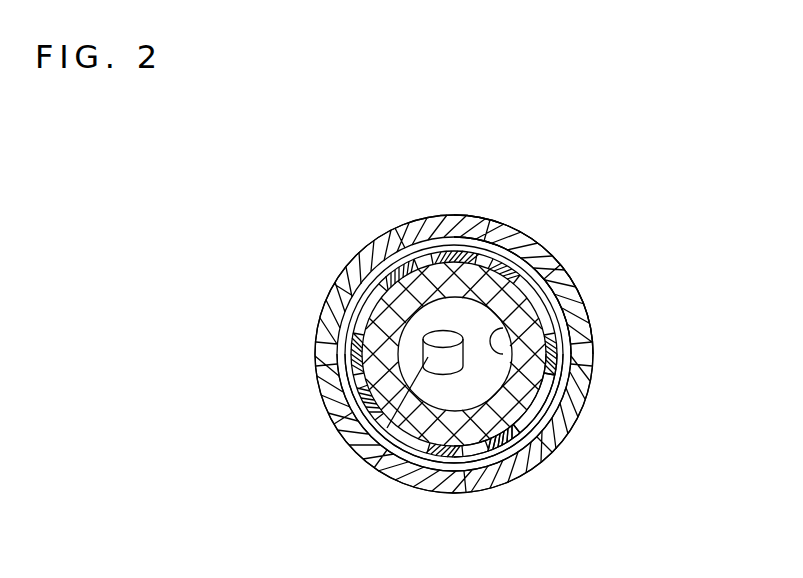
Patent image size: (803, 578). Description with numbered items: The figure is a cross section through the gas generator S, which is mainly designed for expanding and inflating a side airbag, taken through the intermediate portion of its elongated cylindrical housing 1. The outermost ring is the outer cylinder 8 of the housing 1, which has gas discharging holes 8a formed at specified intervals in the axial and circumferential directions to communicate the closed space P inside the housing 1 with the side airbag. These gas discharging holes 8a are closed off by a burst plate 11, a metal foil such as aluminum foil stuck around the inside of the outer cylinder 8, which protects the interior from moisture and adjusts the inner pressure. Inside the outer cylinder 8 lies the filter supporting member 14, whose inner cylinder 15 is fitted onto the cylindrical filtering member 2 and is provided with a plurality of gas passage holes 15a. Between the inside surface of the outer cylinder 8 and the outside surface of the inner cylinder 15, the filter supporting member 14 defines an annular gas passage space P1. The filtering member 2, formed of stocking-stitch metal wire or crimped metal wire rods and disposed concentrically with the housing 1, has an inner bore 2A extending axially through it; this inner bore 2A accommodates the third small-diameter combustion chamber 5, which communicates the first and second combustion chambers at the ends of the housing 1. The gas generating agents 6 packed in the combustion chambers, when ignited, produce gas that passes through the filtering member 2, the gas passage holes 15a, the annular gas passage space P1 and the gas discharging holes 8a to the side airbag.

The housing 1 is at (486, 214).
The filtering member 2 is at (545, 295).
The inner bore 2A is at (589, 333).
The third combustion chamber 5 is at (482, 383).
The gas generating agents 6 is at (384, 465).
The outer cylinder 8 is at (405, 245).
The gas discharging holes 8a is at (518, 243).
The burst plate 11 is at (538, 255).
The filter supporting member 14 is at (367, 268).
The inner cylinder 15 is at (554, 439).
The gas passage holes 15a is at (533, 450).
The closed space P is at (449, 474).
The annular gas passage space P1 is at (348, 397).
The gas generator S is at (434, 131).